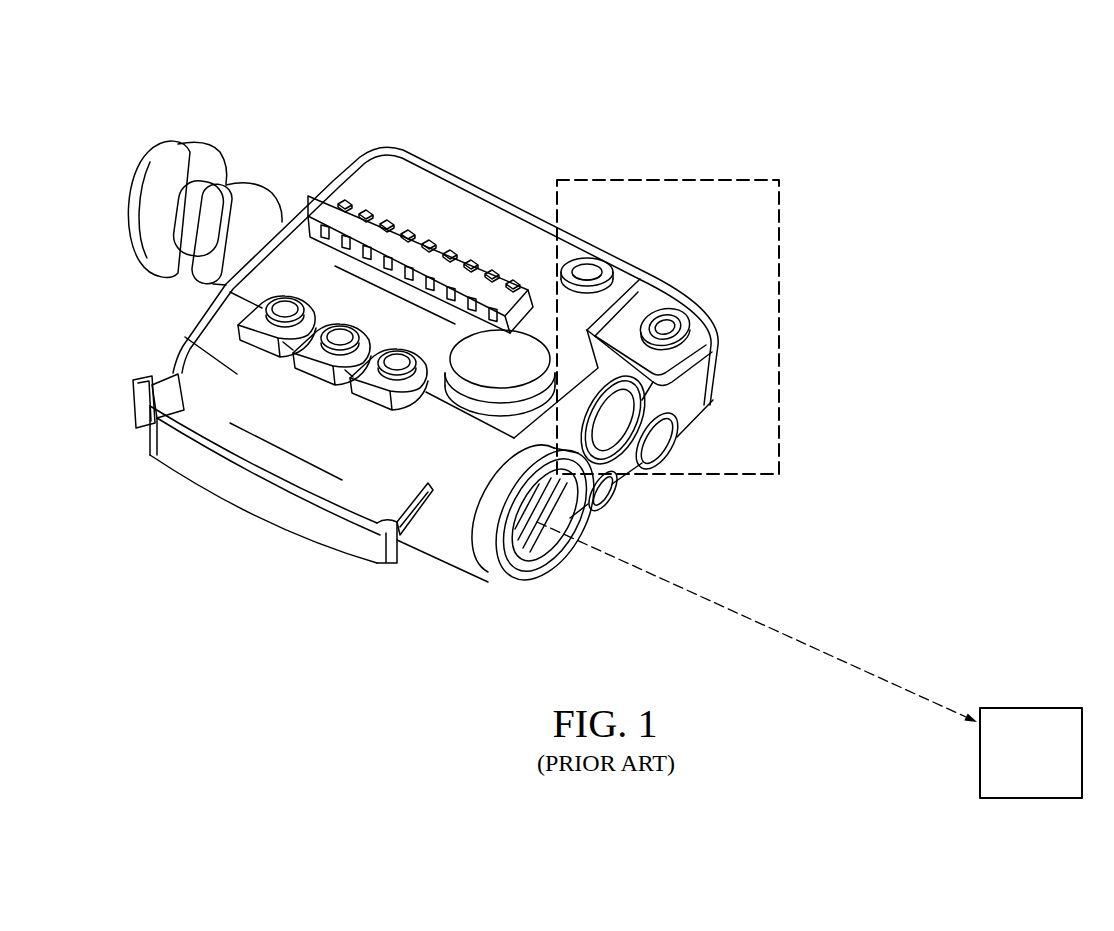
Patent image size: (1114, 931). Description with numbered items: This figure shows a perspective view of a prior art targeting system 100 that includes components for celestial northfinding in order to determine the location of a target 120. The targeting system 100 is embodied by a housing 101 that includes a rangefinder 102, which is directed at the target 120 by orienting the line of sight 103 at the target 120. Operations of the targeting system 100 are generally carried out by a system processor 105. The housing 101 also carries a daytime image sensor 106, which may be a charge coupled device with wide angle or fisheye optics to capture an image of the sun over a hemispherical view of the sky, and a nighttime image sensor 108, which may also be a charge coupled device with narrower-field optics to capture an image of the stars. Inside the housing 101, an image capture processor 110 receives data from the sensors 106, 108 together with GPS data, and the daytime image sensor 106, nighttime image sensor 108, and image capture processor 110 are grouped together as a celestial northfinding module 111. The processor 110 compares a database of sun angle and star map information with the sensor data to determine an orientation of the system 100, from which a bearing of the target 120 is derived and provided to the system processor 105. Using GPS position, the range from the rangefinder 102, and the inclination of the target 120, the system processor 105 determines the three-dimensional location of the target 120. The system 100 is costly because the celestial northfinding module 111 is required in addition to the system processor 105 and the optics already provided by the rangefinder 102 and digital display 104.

The targeting system 100 is at (234, 79).
The housing 101 is at (425, 181).
The rangefinder 102 is at (547, 543).
The line of sight 103 is at (760, 618).
The digital display 104 is at (160, 168).
The system processor 105 is at (352, 493).
The daytime image sensor 106 is at (588, 262).
The nighttime image sensor 108 is at (662, 311).
The image capture processor 110 is at (693, 406).
The celestial northfinding module 111 is at (664, 180).
The target 120 is at (1031, 801).